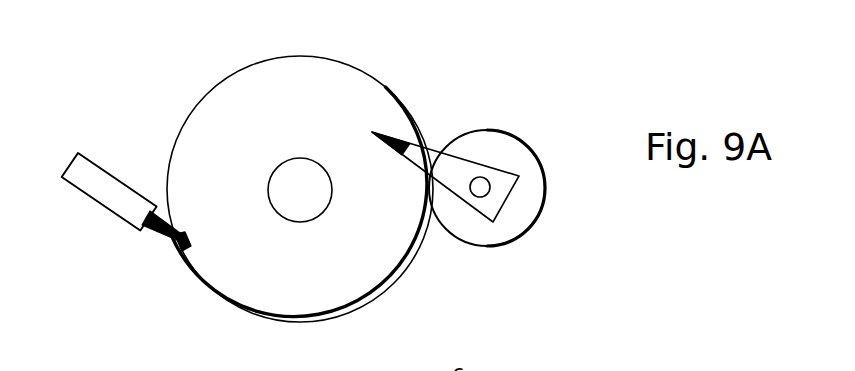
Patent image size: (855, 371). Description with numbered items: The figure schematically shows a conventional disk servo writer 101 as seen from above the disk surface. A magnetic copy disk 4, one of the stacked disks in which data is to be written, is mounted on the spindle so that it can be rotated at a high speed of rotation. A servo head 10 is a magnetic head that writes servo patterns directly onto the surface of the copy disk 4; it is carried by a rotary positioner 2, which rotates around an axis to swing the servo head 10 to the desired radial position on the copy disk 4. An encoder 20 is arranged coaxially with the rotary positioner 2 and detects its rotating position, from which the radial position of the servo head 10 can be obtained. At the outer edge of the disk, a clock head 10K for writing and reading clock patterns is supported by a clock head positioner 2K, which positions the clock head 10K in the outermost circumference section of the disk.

The disk servo writer 101 is at (627, 28).
The magnetic disk 4 is at (292, 313).
The encoder 20 is at (533, 185).
The servo head 10 is at (403, 139).
The rotary positioner 2 is at (493, 222).
The clock head positioner 2K is at (110, 175).
The clock head 10K is at (152, 230).